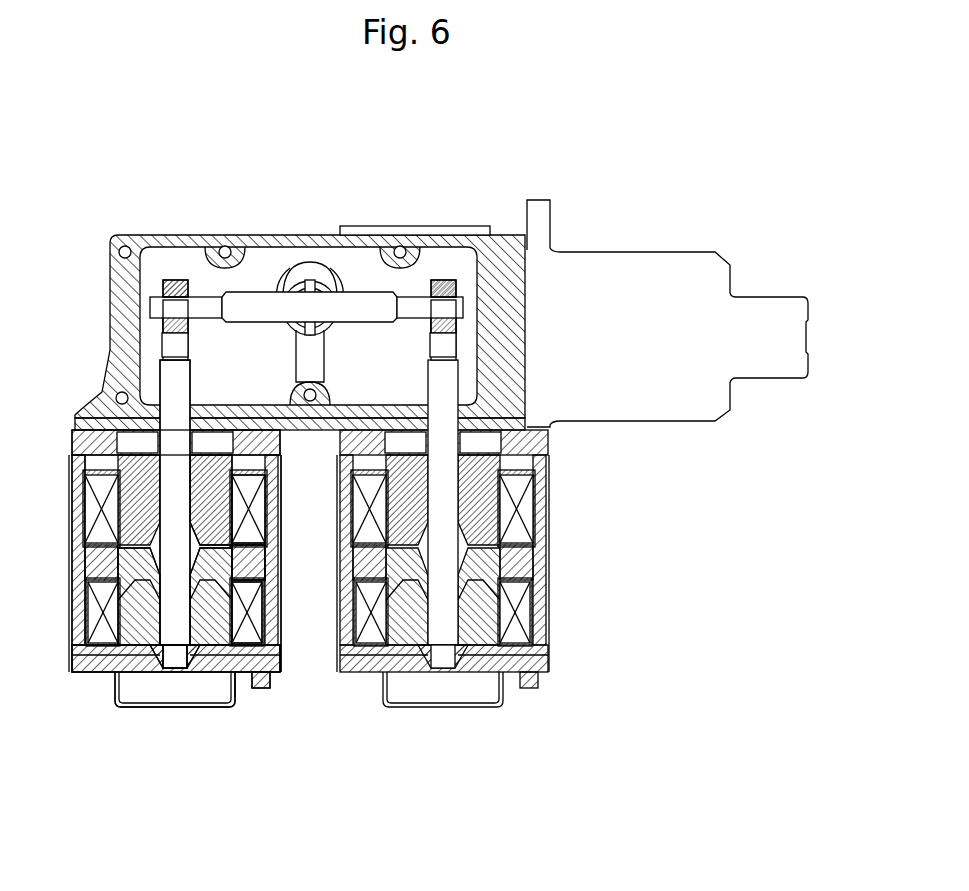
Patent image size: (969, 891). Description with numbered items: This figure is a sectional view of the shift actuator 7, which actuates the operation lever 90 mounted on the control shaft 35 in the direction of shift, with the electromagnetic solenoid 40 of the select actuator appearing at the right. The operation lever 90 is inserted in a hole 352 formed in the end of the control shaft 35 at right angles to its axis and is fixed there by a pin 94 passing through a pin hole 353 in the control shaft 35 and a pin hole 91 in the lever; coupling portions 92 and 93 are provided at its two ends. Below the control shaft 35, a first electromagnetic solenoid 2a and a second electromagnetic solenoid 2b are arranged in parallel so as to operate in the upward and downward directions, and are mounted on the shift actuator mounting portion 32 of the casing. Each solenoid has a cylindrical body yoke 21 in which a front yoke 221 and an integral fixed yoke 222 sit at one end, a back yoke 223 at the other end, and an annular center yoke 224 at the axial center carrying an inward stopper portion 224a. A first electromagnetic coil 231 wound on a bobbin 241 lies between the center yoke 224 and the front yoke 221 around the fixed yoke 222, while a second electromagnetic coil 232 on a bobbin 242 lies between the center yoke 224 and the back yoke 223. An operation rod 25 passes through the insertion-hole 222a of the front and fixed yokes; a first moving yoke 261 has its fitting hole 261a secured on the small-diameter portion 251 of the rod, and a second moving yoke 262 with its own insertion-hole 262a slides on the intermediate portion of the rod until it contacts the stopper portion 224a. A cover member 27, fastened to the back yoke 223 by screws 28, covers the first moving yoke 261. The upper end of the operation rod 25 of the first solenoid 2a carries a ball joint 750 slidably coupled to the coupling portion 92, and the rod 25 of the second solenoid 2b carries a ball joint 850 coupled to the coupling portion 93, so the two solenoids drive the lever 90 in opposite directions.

The shift actuator 7 is at (420, 162).
The electromagnetic solenoid 40 is at (690, 240).
The shift actuator mounting portion 32 is at (75, 417).
The control shaft 35 is at (292, 283).
The operation lever 90 is at (253, 298).
The pin hole 91 is at (283, 311).
The coupling portion 92 is at (413, 300).
The coupling portion 93 is at (200, 300).
The pin 94 is at (309, 290).
The hole 352 is at (335, 305).
The pin hole 353 is at (343, 292).
The ball joint 750 is at (443, 290).
The ball joint 850 is at (163, 283).
The operation rod 25 is at (185, 371).
The fixed yoke 222 is at (223, 430).
The front yoke 221 is at (279, 460).
The insertion-hole 222a is at (190, 484).
The first electromagnetic coil 231 is at (250, 509).
The bobbin 241 is at (243, 546).
The center yoke 224 is at (243, 562).
The stopper portion 224a is at (222, 598).
The body yoke 21 is at (137, 600).
The second electromagnetic coil 232 is at (252, 631).
The bobbin 242 is at (270, 660).
The second moving yoke 262 is at (67, 655).
The fitting hole 261a is at (168, 690).
The bottom wall 262a is at (113, 698).
The small-diameter portion 251 is at (188, 712).
The cover member 27 is at (205, 712).
The first moving yoke 261 is at (222, 710).
The back yoke 223 is at (237, 695).
The screws 28 is at (260, 690).
The first electromagnetic solenoid 2a is at (430, 370).
The second electromagnetic solenoid 2b is at (189, 573).